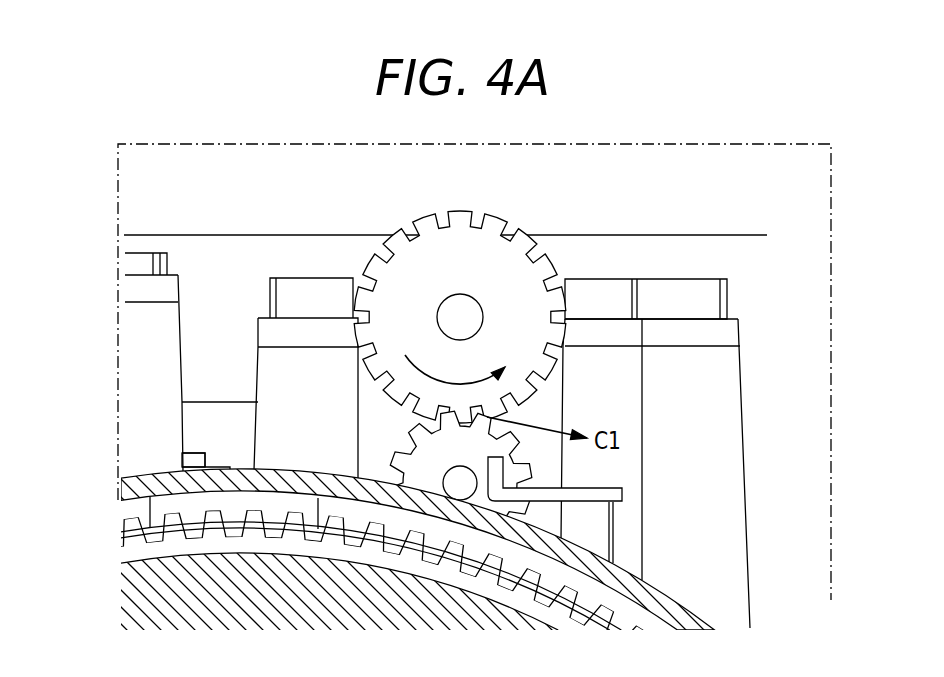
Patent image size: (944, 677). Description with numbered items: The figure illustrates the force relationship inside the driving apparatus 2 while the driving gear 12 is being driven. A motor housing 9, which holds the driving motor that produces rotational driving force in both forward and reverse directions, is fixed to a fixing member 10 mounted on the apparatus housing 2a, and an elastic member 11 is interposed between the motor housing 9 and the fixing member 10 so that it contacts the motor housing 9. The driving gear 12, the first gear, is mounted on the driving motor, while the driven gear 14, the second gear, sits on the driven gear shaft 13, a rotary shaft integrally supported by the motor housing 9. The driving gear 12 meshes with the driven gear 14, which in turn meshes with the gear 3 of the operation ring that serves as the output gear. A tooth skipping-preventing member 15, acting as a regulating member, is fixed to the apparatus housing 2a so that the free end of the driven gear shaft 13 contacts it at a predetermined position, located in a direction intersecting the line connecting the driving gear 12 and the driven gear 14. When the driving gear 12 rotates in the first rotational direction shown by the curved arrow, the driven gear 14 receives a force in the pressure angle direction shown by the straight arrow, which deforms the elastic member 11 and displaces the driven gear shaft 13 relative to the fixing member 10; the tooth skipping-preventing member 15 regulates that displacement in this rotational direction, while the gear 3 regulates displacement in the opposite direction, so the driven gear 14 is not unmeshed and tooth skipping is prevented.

The driving apparatus 2 is at (208, 143).
The apparatus housing 2a is at (672, 593).
The gear 3 is at (137, 546).
The motor housing 9 is at (655, 293).
The fixing member 10 is at (708, 400).
The elastic member 11 is at (697, 332).
The driving gear 12 is at (405, 258).
The driven gear shaft 13 is at (430, 458).
The driven gear 14 is at (407, 450).
The tooth skipping-preventing member 15 is at (582, 490).